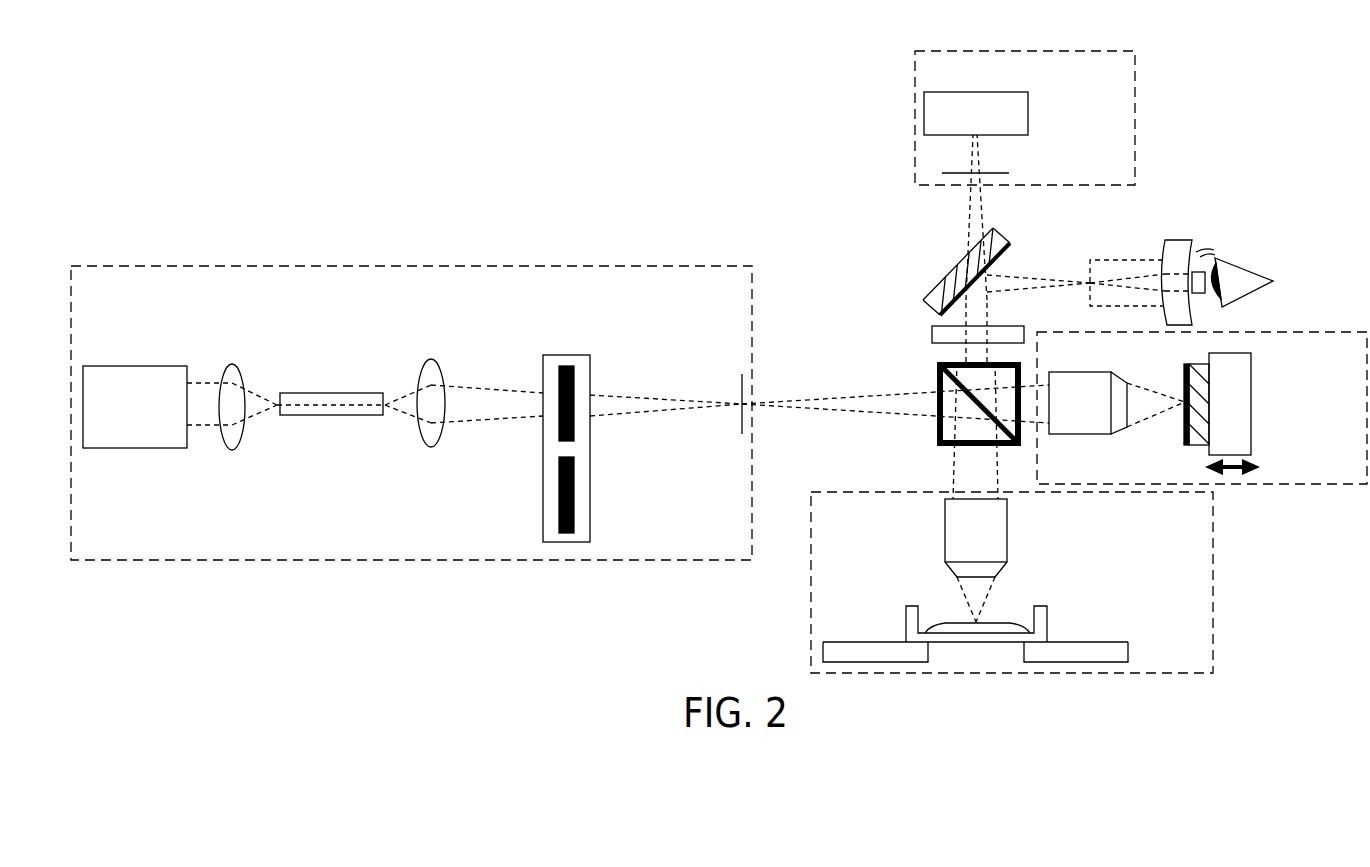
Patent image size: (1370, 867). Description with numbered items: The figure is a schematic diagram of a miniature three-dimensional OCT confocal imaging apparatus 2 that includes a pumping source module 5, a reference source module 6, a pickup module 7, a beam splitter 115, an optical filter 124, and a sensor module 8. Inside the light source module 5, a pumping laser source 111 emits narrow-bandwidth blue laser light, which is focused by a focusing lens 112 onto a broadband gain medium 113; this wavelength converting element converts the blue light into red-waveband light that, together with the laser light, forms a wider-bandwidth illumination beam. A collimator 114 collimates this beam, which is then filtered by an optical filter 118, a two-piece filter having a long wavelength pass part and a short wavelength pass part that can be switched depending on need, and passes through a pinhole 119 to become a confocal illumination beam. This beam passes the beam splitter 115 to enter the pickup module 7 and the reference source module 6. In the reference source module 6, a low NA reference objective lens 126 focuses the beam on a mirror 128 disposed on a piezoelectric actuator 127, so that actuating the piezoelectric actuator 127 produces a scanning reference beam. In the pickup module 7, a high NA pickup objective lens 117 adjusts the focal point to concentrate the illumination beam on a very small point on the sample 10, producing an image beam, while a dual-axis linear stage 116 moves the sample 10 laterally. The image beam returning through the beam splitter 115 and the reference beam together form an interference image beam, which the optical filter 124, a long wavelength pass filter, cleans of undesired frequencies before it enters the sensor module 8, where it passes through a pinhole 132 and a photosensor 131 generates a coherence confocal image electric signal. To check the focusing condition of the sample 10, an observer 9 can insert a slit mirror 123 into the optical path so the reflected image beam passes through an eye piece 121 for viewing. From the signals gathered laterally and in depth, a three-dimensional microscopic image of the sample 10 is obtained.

The 3D OCT confocal imaging apparatus 2 is at (675, 224).
The pumping source module 5 is at (260, 267).
The pumping laser source 111 is at (138, 365).
The focusing lens 112 is at (240, 365).
The broadband gain medium 113 is at (310, 393).
The collimator 114 is at (437, 360).
The optical filter 118 is at (590, 357).
The pinhole 119 is at (742, 420).
The beam splitter 115 is at (937, 428).
The optical filter 124 is at (933, 334).
The slit mirror 123 is at (997, 235).
The sensor module 8 is at (1025, 50).
The photosensor 131 is at (1028, 106).
The pinhole 132 is at (1000, 173).
The eye piece 121 is at (1178, 247).
The observer 9 is at (1257, 271).
The reference source module 6 is at (1247, 485).
The reference objective lens 126 is at (1063, 434).
The mirror 128 is at (1197, 364).
The piezoelectric actuator 127 is at (1251, 395).
The pickup module 7 is at (1138, 675).
The pickup objective lens 117 is at (945, 548).
The sample 10 is at (1000, 620).
The dual-axis linear stage 116 is at (1083, 642).